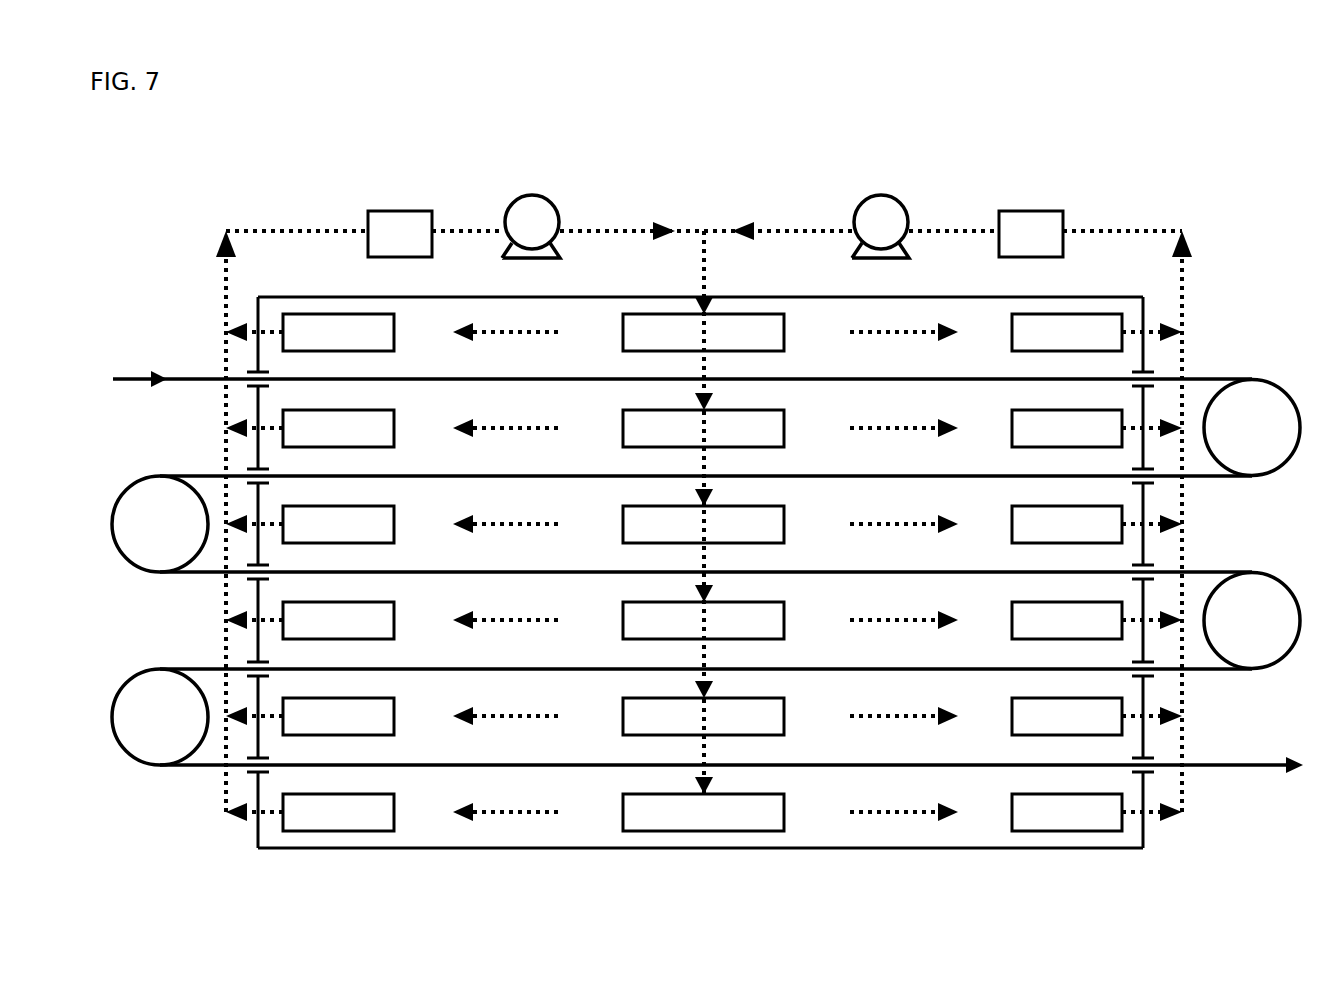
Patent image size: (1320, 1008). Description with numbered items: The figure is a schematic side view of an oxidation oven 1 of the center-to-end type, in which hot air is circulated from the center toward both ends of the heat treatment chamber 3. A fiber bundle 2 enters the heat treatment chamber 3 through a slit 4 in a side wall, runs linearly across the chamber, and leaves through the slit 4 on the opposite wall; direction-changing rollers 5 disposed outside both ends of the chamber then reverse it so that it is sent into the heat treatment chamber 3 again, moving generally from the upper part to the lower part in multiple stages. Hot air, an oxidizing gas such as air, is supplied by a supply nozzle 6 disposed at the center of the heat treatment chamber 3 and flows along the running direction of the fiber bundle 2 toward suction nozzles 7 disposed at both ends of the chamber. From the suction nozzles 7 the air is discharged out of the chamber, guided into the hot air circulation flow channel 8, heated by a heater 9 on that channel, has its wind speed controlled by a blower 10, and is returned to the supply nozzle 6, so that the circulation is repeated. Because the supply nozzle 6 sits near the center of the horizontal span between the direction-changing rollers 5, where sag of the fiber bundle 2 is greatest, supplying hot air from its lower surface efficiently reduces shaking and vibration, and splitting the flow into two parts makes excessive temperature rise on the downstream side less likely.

The oxidation oven 1 is at (1088, 219).
The fiber bundle 2 is at (187, 378).
The heat treatment chamber 3 is at (935, 297).
The slit 4 is at (1143, 373).
The direction-changing roller 5 is at (1283, 575).
The supply nozzle 6 is at (644, 314).
The suction nozzle 7 is at (318, 314).
The hot air circulation flow channel 8 is at (626, 231).
The heater 9 is at (368, 212).
The blower 10 is at (505, 215).